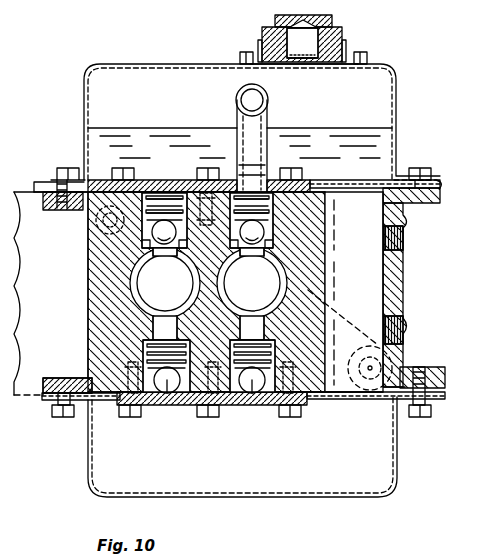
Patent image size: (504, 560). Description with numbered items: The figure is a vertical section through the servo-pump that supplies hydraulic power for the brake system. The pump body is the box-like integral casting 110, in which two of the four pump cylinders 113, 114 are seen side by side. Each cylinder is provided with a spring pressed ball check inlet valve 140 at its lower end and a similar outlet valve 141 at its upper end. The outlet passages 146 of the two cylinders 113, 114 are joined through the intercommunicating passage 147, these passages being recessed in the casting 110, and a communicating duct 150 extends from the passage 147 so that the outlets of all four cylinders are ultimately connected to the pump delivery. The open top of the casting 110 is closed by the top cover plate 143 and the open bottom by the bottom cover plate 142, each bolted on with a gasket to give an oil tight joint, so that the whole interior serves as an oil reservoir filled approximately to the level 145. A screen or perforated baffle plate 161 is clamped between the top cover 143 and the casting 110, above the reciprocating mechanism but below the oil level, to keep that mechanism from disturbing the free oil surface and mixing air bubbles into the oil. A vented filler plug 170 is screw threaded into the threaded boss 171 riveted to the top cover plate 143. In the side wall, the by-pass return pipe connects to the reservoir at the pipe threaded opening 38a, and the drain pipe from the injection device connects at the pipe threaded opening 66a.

The cylinder block casting 110 is at (104, 278).
The pump cylinder 113 is at (165, 294).
The pump cylinder 114 is at (252, 294).
The inlet valve 140 is at (166, 392).
The outlet valve 141 is at (160, 232).
The bottom cover plate 142 is at (300, 494).
The top cover plate 143 is at (134, 64).
The oil level 145 is at (131, 128).
The outlet passage 146 is at (147, 228).
The intercommunicating passage 147 is at (195, 203).
The communicating duct 150 is at (260, 99).
The baffle plate 161 is at (352, 182).
The filler plug 170 is at (336, 29).
The threaded boss 171 is at (345, 53).
The pipe threaded opening 38a is at (418, 248).
The pipe threaded opening 66a is at (418, 330).